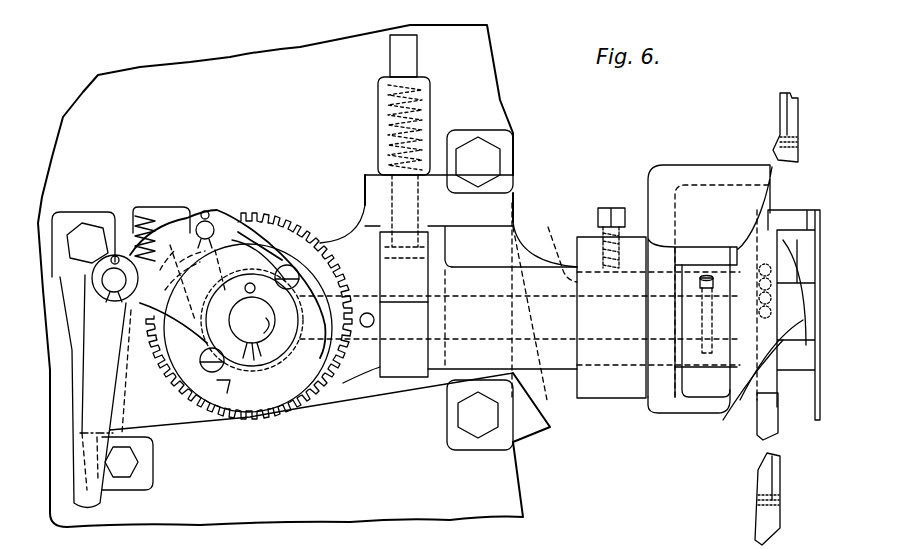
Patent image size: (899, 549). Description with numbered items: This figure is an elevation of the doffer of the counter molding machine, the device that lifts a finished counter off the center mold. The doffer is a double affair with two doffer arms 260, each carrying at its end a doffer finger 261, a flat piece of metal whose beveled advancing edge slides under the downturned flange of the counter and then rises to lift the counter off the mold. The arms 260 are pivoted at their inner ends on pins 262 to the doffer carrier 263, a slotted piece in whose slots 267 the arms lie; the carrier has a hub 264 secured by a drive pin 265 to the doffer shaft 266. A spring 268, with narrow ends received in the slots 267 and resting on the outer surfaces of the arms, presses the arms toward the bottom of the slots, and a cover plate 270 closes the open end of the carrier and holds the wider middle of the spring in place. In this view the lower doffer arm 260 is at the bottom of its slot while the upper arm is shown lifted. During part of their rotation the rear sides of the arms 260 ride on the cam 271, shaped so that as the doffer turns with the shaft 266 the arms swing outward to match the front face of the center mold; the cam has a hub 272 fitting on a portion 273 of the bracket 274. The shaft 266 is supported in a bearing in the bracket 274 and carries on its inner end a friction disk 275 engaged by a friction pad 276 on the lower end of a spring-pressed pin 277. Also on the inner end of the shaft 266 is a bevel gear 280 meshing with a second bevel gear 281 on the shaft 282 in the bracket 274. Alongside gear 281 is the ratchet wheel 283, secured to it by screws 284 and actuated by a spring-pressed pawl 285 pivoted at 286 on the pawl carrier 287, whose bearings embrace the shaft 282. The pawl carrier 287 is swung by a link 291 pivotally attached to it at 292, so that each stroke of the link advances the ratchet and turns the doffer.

The doffer arm 260 is at (797, 97).
The doffer finger 261 is at (777, 108).
The pin 262 is at (727, 340).
The doffer carrier 263 is at (773, 367).
The hub 264 is at (690, 350).
The drive pin 265 is at (705, 277).
The doffer shaft 266 is at (473, 340).
The slot 267 is at (803, 232).
The spring 268 is at (740, 400).
The cover plate 270 is at (723, 420).
The cam 271 is at (747, 227).
The hub 272 is at (583, 240).
The portion of the bracket 273 is at (544, 301).
The bracket 274 is at (493, 200).
The friction disk 275 is at (417, 367).
The friction pad 276 is at (425, 247).
The pin 277 is at (411, 63).
The bevel gear 280 is at (343, 372).
The second bevel gear 281 is at (330, 385).
The shaft 282 is at (266, 333).
The ratchet wheel 283 is at (243, 380).
The screws 284 is at (290, 265).
The pawl 285 is at (247, 223).
The pawl pivot 286 is at (208, 227).
The pawl carrier 287 is at (187, 223).
The link 291 is at (103, 385).
The pivot 292 is at (90, 263).